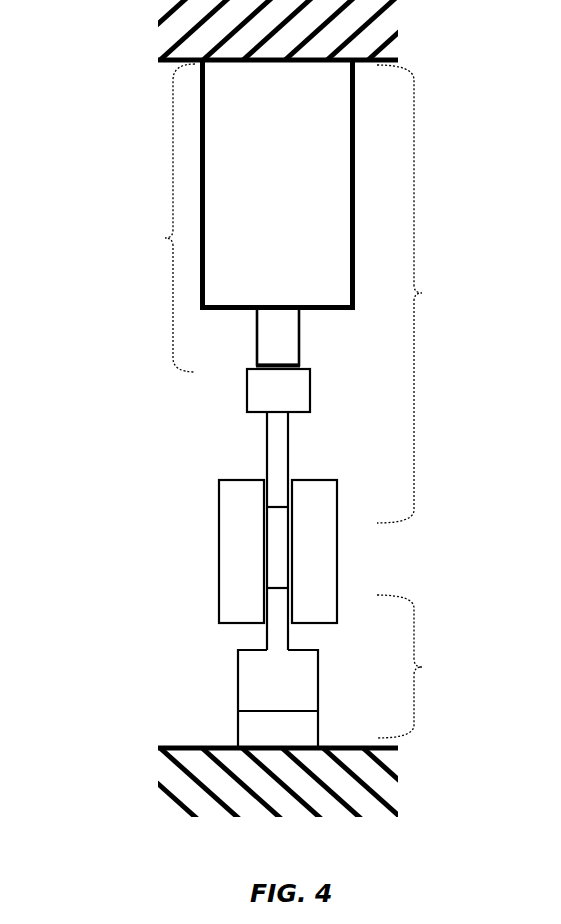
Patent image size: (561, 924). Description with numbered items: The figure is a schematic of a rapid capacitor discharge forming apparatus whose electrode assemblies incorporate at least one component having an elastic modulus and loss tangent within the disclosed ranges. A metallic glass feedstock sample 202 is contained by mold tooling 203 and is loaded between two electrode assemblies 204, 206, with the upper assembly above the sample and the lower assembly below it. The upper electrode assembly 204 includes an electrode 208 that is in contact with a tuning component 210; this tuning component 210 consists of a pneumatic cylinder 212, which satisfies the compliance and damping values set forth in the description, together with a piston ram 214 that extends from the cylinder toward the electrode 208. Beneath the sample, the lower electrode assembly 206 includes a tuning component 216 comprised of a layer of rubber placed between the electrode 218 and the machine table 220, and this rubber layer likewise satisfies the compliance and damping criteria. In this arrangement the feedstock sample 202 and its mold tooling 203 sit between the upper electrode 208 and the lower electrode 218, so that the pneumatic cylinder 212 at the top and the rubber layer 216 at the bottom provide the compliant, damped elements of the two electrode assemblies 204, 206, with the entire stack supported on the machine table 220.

The metallic glass feedstock sample 202 is at (277, 543).
The mold tooling 203 is at (307, 545).
The electrode assembly 204 is at (421, 293).
The electrode assembly 206 is at (421, 667).
The electrode 208 is at (278, 460).
The tuning component 210 is at (166, 238).
The pneumatic cylinder 212 is at (280, 205).
The piston ram 214 is at (272, 338).
The tuning component 216 is at (282, 725).
The electrode 218 is at (278, 627).
The machine table 220 is at (177, 775).